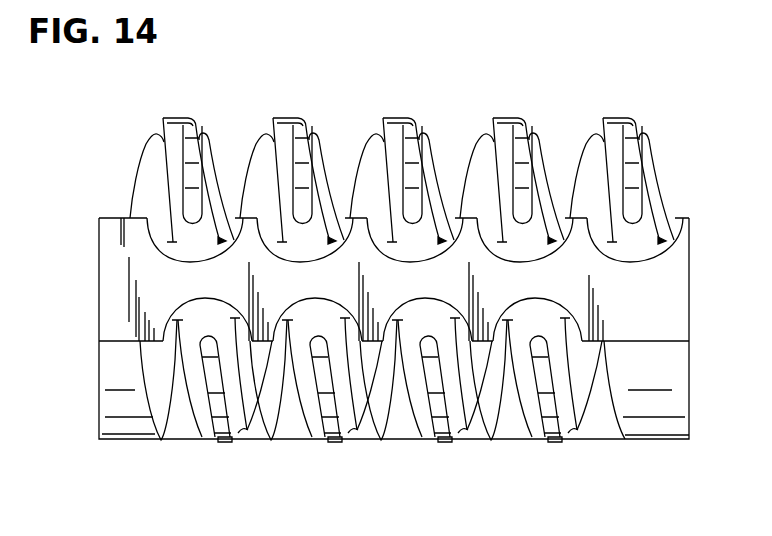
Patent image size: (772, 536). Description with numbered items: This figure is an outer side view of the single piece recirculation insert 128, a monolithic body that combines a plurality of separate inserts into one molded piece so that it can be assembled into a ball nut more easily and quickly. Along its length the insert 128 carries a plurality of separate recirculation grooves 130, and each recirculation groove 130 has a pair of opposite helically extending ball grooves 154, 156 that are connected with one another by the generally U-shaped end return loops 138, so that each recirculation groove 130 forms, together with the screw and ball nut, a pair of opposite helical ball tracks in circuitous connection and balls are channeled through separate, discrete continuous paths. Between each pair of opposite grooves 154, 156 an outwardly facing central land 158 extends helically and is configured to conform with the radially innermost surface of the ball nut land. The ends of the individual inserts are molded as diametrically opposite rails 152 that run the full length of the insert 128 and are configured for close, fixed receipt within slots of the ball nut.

The single piece recirculation insert 128 is at (666, 71).
The recirculation groove 130 is at (375, 282).
The end return loop 138 is at (205, 249).
The rail 152 is at (672, 302).
The helically extending ball groove 154 is at (195, 125).
The helically extending ball groove 156 is at (160, 133).
The central land 158 is at (690, 184).